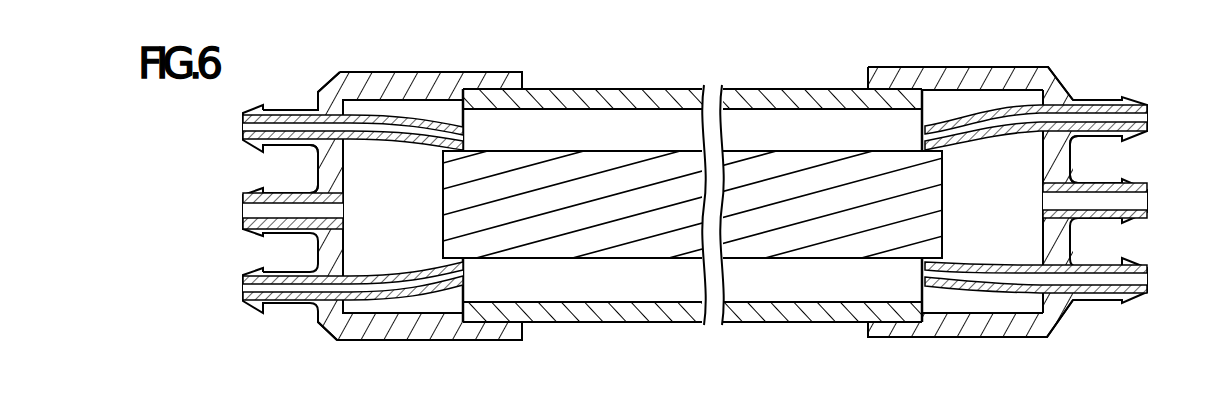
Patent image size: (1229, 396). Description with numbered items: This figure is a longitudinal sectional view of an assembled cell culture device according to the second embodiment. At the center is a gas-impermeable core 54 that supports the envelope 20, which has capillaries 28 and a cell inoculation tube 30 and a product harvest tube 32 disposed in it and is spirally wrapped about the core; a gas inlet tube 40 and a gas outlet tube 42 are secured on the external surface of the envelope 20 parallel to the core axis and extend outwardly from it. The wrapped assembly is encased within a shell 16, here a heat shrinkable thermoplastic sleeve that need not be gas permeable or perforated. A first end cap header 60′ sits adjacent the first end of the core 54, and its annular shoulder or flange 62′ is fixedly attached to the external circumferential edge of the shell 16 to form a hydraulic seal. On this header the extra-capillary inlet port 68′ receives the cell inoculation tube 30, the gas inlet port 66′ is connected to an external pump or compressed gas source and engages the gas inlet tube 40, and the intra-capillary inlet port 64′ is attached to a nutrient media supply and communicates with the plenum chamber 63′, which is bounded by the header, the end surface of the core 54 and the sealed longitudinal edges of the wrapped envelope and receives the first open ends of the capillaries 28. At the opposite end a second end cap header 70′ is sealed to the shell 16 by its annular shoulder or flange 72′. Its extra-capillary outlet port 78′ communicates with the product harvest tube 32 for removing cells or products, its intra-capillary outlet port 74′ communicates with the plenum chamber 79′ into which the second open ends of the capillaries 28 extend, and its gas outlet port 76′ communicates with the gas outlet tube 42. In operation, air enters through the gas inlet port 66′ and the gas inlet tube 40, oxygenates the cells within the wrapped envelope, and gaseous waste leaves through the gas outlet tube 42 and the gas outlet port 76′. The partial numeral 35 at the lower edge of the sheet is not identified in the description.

The shell 16 is at (740, 95).
The envelope 20 is at (585, 122).
The capillaries 28 is at (452, 110).
The cell inoculation tube 30 is at (393, 105).
The product harvest tube 32 is at (995, 292).
The fitting 35 is at (494, 368).
The gas inlet tube 40 is at (416, 294).
The gas outlet tube 42 is at (993, 108).
The core 54 is at (790, 259).
The first end cap header 60′ is at (252, 352).
The annular shoulder or flange 62′ is at (515, 71).
The plenum chamber 63′ is at (370, 163).
The intra-capillary inlet port 64′ is at (243, 225).
The gas inlet port 66′ is at (243, 301).
The extra-capillary inlet port 68′ is at (243, 115).
The second end cap header 70′ is at (1120, 320).
The annular shoulder or flange 72′ is at (902, 66).
The intra-capillary outlet port 74′ is at (1148, 188).
The gas outlet port 76′ is at (1148, 128).
The extra-capillary outlet port 78′ is at (1148, 271).
The plenum chamber 79′ is at (1008, 160).